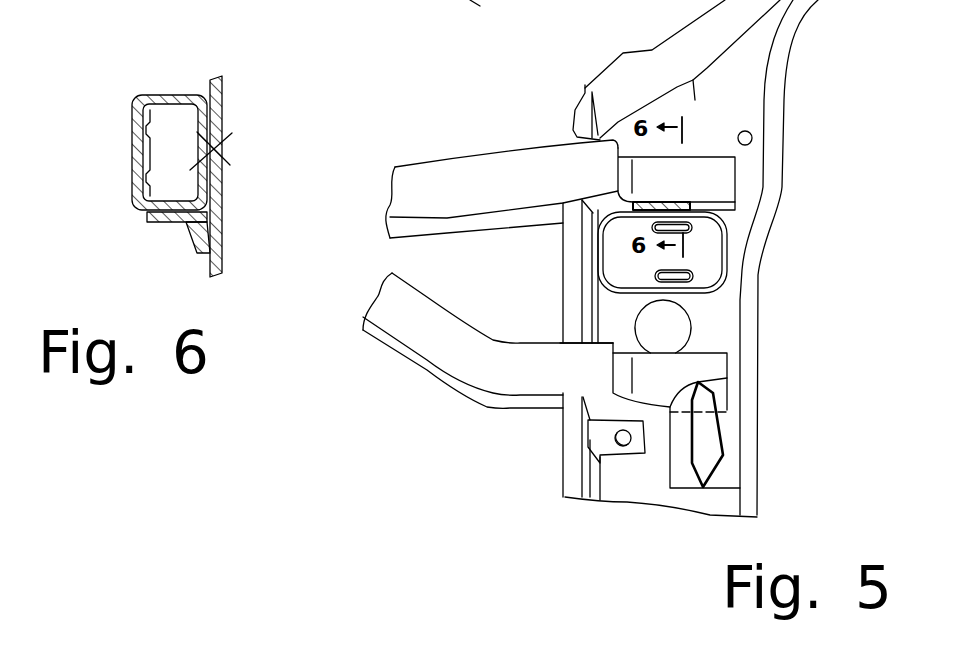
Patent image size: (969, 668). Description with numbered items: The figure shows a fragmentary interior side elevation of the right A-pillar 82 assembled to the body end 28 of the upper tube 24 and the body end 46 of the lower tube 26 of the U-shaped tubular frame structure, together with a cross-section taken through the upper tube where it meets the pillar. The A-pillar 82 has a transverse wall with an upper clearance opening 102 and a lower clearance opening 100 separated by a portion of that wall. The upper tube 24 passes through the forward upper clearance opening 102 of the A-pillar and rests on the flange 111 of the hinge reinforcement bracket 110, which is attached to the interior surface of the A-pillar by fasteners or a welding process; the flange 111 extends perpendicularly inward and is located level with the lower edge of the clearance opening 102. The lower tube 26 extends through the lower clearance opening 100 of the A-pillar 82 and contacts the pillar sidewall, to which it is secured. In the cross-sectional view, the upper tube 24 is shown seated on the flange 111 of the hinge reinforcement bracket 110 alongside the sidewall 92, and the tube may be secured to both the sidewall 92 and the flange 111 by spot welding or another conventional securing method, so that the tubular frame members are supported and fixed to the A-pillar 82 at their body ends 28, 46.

In FIG. 6, the upper tube 24 is at (168, 93).
In FIG. 5, the upper tube 24 is at (437, 185).
In FIG. 5, the lower tube 26 is at (520, 378).
In FIG. 5, the body end 28 is at (672, 189).
In FIG. 5, the body end 46 is at (673, 384).
In FIG. 5, the right A-pillar 82 is at (762, 227).
In FIG. 6, the sidewall 92 is at (222, 108).
In FIG. 5, the sidewall 92 is at (730, 325).
In FIG. 5, the lower clearance opening 100 is at (568, 340).
In FIG. 5, the upper clearance opening 102 is at (573, 140).
In FIG. 5, the hinge reinforcement bracket 110 is at (620, 268).
In FIG. 6, the flange 111 is at (167, 227).
In FIG. 5, the flange 111 is at (687, 202).